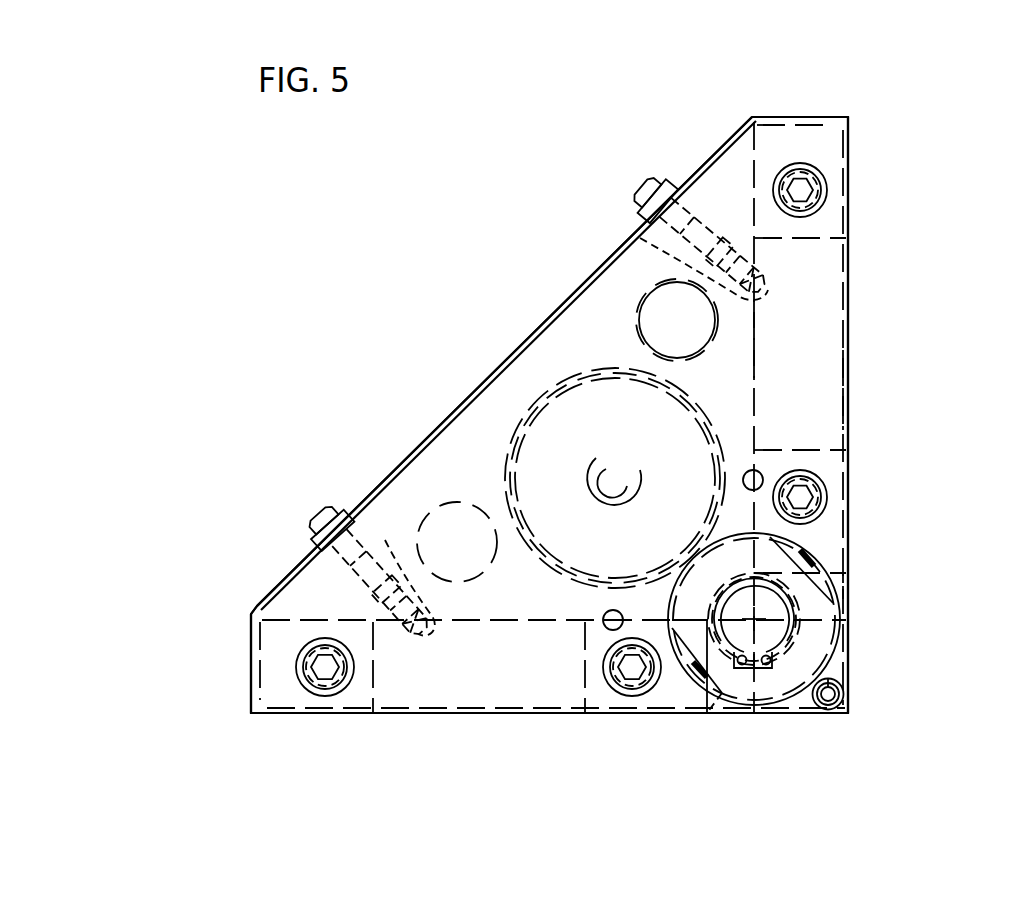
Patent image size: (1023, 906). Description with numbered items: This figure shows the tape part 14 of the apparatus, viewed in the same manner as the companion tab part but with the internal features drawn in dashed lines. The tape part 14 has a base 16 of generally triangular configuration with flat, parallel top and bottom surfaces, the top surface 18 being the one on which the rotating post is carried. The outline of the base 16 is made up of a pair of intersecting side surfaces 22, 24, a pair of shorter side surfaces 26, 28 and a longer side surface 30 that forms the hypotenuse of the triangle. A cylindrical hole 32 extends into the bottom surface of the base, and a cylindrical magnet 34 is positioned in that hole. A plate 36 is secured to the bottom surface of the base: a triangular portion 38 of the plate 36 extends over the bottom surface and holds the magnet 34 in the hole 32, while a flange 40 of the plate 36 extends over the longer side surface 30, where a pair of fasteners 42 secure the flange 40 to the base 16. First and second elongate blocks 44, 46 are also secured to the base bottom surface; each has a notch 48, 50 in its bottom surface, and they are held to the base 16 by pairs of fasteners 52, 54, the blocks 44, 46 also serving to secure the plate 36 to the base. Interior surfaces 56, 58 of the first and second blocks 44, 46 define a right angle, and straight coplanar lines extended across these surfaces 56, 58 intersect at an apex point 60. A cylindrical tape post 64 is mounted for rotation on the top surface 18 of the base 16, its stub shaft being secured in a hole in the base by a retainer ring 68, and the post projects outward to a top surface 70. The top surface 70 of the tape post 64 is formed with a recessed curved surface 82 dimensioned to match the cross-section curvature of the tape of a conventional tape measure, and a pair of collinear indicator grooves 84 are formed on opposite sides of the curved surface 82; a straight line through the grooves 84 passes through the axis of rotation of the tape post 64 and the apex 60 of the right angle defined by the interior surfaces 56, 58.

The tape part 14 is at (907, 111).
The base 16 is at (734, 380).
The top surface 18 is at (744, 338).
The side surface 22 is at (848, 415).
The side surface 24 is at (566, 715).
The shorter side surface 26 is at (800, 117).
The shorter side surface 28 is at (251, 667).
The longer side surface 30 is at (518, 348).
The cylindrical hole 32 is at (518, 432).
The cylindrical magnet 34 is at (505, 470).
The plate 36 is at (254, 625).
The triangular portion 38 is at (251, 690).
The flange 40 is at (393, 472).
The fasteners 42 is at (655, 175).
The first elongate block 44 is at (843, 583).
The second elongate block 46 is at (712, 690).
The notch 48 is at (833, 387).
The notch 50 is at (477, 684).
The fasteners 52 is at (815, 188).
The fasteners 54 is at (325, 675).
The interior surface 56 is at (640, 238).
The interior surface 58 is at (385, 540).
The apex point 60 is at (768, 612).
The tape post 64 is at (842, 630).
The retainer ring 68 is at (768, 668).
The top surface 70 is at (800, 540).
The recessed curved surface 82 is at (810, 658).
The indicator grooves 84 is at (812, 557).